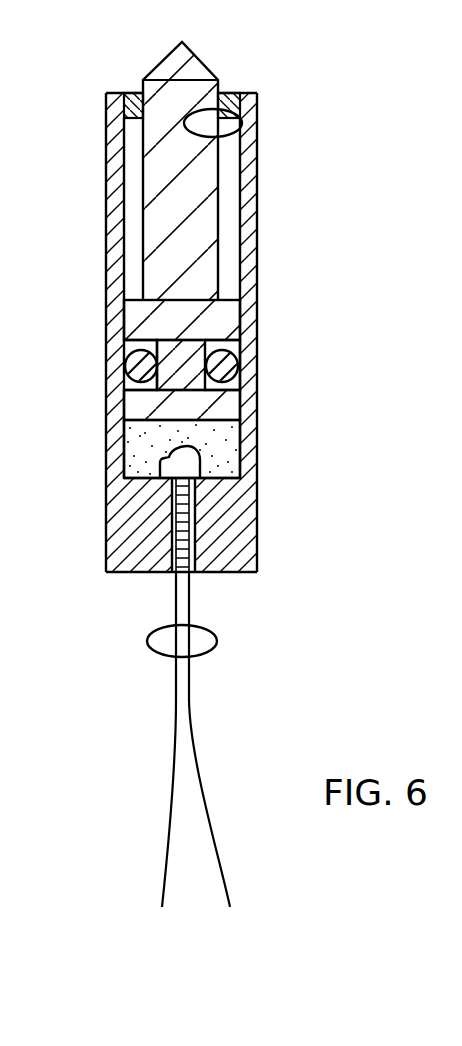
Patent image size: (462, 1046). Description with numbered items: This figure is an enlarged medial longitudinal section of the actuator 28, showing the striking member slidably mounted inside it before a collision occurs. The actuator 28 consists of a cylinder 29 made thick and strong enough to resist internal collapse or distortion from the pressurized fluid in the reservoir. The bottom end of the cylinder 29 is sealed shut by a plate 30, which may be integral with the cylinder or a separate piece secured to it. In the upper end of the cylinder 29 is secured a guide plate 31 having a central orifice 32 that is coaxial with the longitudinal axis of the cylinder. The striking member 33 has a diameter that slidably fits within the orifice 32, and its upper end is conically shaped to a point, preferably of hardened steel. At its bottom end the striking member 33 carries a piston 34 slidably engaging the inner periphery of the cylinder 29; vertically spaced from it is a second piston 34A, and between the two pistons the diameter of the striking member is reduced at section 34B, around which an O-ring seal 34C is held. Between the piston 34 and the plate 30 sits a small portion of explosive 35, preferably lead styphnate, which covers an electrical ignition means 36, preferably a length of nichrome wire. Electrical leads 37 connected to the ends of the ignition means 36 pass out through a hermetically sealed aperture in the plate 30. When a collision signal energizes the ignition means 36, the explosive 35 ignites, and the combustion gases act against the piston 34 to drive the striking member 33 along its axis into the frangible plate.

The actuator 28 is at (280, 345).
The cylinder 29 is at (253, 235).
The plate 30 is at (219, 575).
The plate 31 is at (233, 92).
The central orifice 32 is at (242, 124).
The striking member 33 is at (218, 159).
The piston 34 is at (241, 410).
The second piston 34A is at (241, 311).
The reduced-diameter section 34B is at (216, 376).
The O-ring seal 34C is at (241, 353).
The explosive 35 is at (222, 439).
The electrical ignition means 36 is at (200, 460).
The electrical leads 37 is at (217, 640).